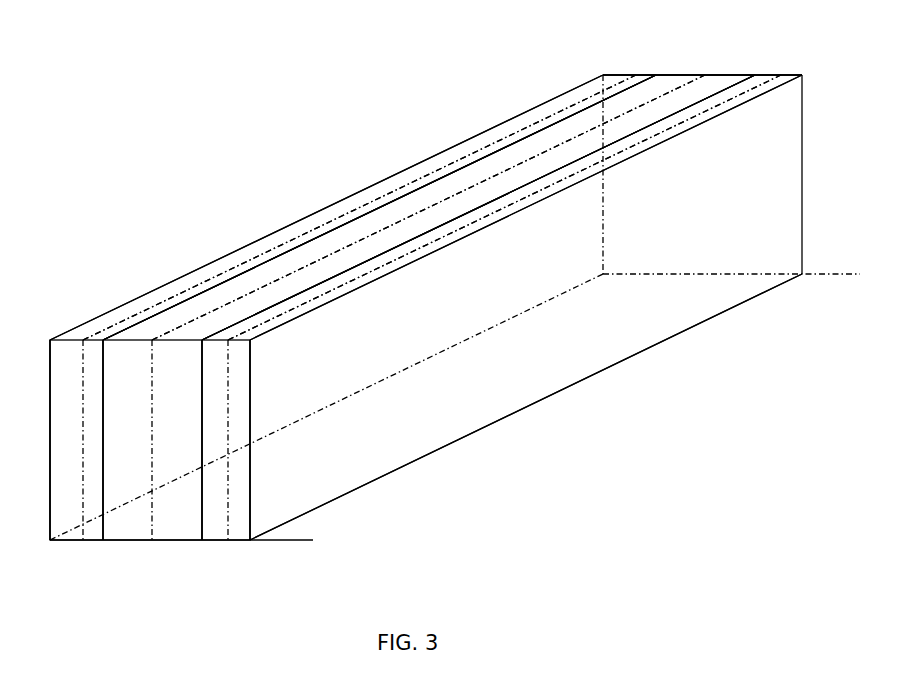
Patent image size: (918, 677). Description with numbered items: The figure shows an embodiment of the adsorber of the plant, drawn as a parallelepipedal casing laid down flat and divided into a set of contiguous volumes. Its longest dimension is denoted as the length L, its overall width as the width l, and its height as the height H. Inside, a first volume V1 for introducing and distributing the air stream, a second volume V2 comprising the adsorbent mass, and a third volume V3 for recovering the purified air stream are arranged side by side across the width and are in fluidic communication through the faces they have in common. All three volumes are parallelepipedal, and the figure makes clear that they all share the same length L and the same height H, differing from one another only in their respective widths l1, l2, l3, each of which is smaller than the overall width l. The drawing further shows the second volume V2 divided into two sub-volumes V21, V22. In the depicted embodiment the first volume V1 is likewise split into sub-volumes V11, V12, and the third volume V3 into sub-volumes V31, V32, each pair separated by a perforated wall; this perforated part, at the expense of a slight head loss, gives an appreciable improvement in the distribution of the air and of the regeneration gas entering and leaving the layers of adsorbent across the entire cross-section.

The first volume V1 is at (270, 253).
The first sub-volume of the first volume V11 is at (83, 331).
The second sub-volume of the first volume V12 is at (120, 329).
The second volume V2 is at (355, 253).
The first sub-volume of the second volume V21 is at (155, 326).
The second sub-volume of the second volume V22 is at (198, 324).
The third volume V3 is at (440, 239).
The first sub-volume of the third volume V31 is at (237, 327).
The second sub-volume of the third volume V32 is at (270, 325).
The height H is at (50, 340).
The length L is at (855, 274).
The width l is at (802, 75).
The width of the first volume l1 is at (656, 75).
The width of the second volume l2 is at (755, 75).
The width of the third volume l3 is at (802, 65).